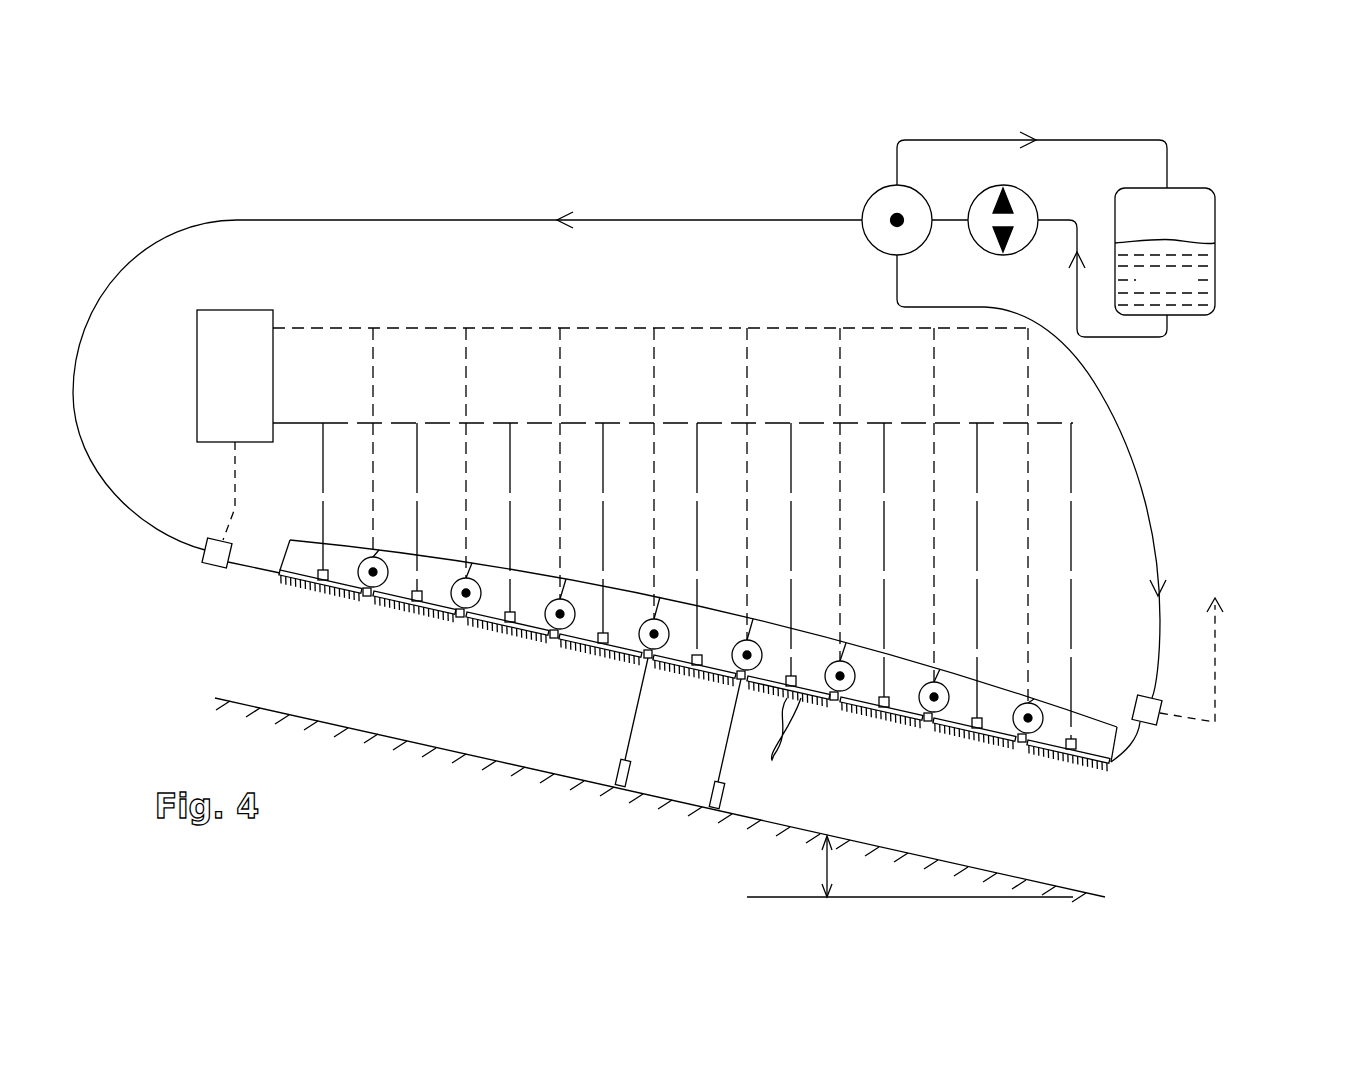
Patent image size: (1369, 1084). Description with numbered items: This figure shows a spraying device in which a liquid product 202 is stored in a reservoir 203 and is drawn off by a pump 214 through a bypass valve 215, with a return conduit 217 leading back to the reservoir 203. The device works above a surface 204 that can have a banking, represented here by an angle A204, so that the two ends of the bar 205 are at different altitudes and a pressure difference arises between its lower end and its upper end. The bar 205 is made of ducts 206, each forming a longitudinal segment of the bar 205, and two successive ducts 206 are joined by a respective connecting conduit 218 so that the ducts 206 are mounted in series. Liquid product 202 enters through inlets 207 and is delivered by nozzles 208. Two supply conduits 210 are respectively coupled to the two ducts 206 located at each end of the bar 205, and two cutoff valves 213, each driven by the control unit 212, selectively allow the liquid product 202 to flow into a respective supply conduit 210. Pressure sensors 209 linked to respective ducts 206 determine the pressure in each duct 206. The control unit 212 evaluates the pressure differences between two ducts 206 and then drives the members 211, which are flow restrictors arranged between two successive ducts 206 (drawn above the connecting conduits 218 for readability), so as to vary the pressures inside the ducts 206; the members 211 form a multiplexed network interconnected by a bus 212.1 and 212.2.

The liquid product 202 is at (1165, 272).
The reservoir 203 is at (1215, 230).
The surface 204 is at (988, 860).
The bar 205 is at (255, 630).
The ducts 206 is at (514, 633).
The inlets 207 is at (923, 722).
The nozzles 208 is at (778, 742).
The pressure sensors 209 is at (984, 726).
The supply conduits 210 is at (663, 215).
The members 211 is at (840, 702).
The control unit 212 is at (719, 454).
The bus 212.1 is at (313, 423).
The bus 212.2 is at (322, 328).
The cutoff valves 213 is at (205, 555).
The pump 214 is at (1000, 187).
The bypass valve 215 is at (868, 196).
The return conduit 217 is at (1172, 167).
The connecting conduits 218 is at (366, 598).
The angle A204 is at (910, 866).